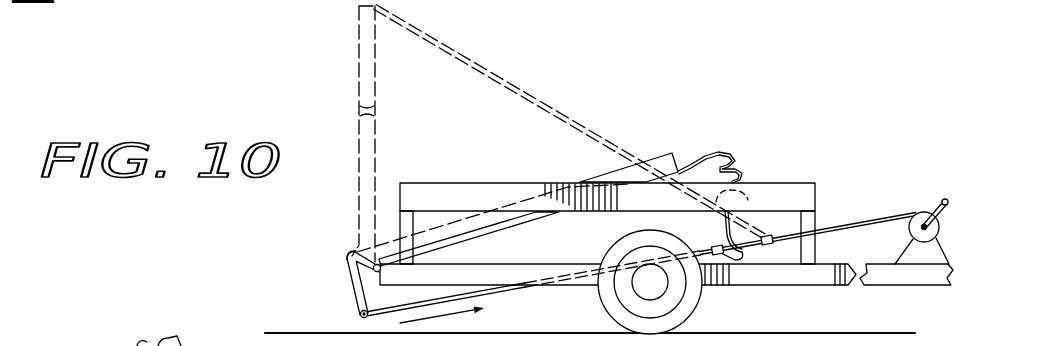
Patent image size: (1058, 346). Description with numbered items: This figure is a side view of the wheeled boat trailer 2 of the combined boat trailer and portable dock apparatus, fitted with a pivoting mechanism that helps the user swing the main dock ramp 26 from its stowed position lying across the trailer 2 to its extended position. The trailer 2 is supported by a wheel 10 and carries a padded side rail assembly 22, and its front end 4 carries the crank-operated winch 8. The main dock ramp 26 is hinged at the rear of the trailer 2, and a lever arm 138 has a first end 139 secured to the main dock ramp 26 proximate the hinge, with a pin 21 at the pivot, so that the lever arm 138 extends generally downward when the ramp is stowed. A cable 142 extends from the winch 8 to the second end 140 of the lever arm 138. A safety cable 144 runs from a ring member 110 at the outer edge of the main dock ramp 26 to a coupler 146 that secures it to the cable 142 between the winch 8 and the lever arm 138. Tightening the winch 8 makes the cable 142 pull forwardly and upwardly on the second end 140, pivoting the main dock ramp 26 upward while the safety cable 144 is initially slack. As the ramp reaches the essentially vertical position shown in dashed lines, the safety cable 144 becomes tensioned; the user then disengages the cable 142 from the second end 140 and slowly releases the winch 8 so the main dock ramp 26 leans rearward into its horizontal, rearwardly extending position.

The wheeled boat trailer 2 is at (640, 193).
The front end 4 is at (896, 296).
The crank-operated winch 8 is at (925, 212).
The wheel 10 is at (690, 309).
The pivot pin 21 is at (374, 272).
The padded side rail assembly 22 is at (783, 172).
The main dock ramp 26 is at (377, 157).
The ring member 110 is at (380, 7).
The lever arm 138 is at (349, 272).
The first end 139 is at (349, 260).
The second end 140 is at (360, 317).
The cable 142 is at (837, 225).
The safety cable 144 is at (540, 103).
The coupler 146 is at (769, 235).